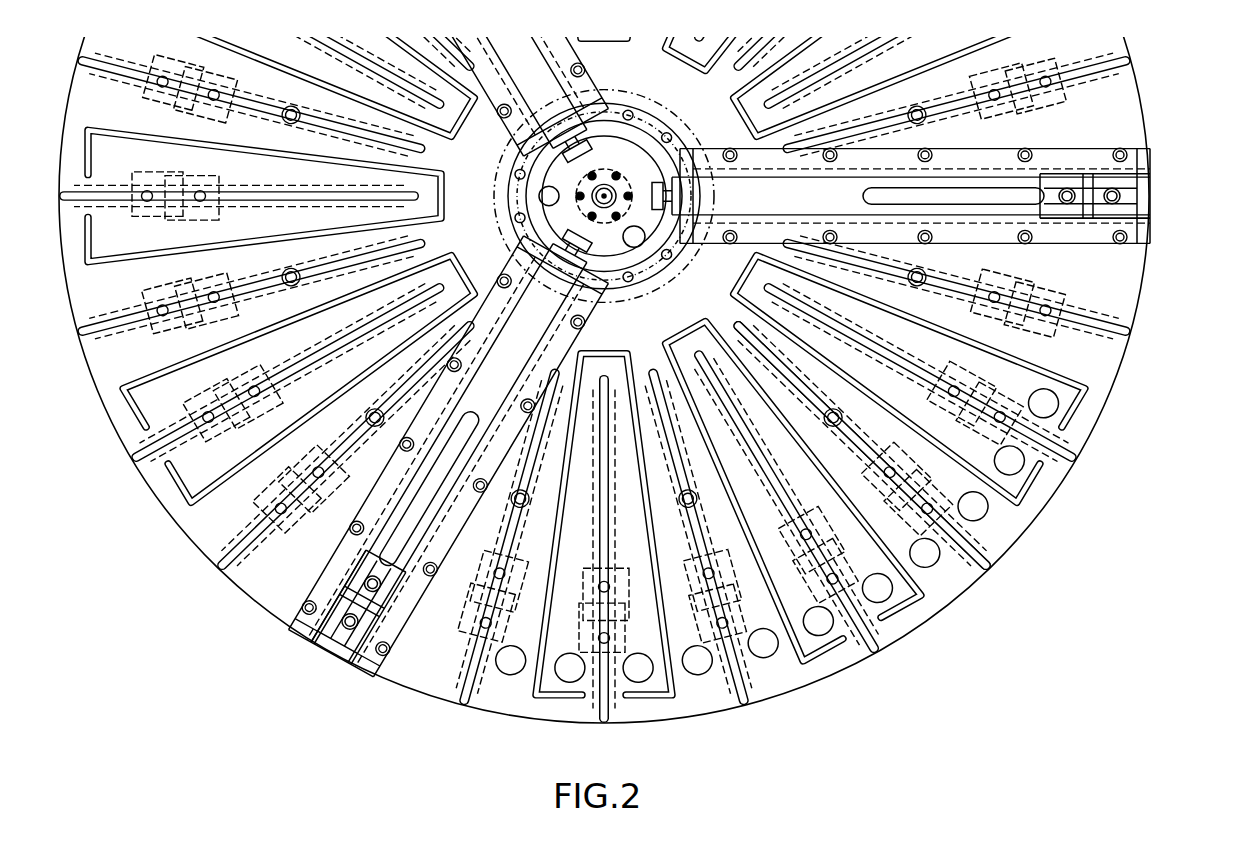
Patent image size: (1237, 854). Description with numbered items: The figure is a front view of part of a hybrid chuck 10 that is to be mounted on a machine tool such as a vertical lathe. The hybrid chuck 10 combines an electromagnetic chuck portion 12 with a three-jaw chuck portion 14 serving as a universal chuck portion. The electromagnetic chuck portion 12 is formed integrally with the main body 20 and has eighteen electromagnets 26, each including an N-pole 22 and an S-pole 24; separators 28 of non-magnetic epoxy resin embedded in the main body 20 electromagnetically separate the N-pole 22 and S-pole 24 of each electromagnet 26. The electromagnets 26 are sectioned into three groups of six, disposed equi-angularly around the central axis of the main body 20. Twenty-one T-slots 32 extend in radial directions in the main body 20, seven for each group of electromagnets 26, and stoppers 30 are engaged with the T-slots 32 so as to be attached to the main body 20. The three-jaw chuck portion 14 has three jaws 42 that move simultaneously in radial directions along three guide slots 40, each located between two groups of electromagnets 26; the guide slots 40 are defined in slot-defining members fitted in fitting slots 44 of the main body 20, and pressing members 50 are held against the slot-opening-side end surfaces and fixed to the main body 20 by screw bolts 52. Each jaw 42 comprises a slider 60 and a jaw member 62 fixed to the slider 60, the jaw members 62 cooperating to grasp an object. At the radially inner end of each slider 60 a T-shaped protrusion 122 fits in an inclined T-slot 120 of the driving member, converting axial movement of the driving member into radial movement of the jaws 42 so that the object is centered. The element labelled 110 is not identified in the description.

The hybrid chuck 10 is at (624, 361).
The electromagnetic chuck portion 12 is at (604, 361).
The three-jaw chuck portion 14 is at (730, 419).
The main body 20 is at (586, 347).
The N-pole 22 is at (898, 360).
The S-pole 24 is at (699, 537).
The electromagnet 26 is at (862, 446).
The separator 28 is at (778, 533).
The stopper 30 is at (774, 480).
The T-slot 32 is at (604, 524).
The guide slot 40 is at (719, 338).
The jaw 42 is at (719, 413).
The fitting slot 44 is at (716, 407).
The pressing member 50 is at (728, 333).
The screw bolt 52 is at (713, 329).
The slider 60 is at (732, 331).
The jaw member 62 is at (730, 430).
The hub ring 110 is at (604, 196).
The T-slot 120 is at (604, 196).
The T-shaped protrusion 122 is at (604, 196).